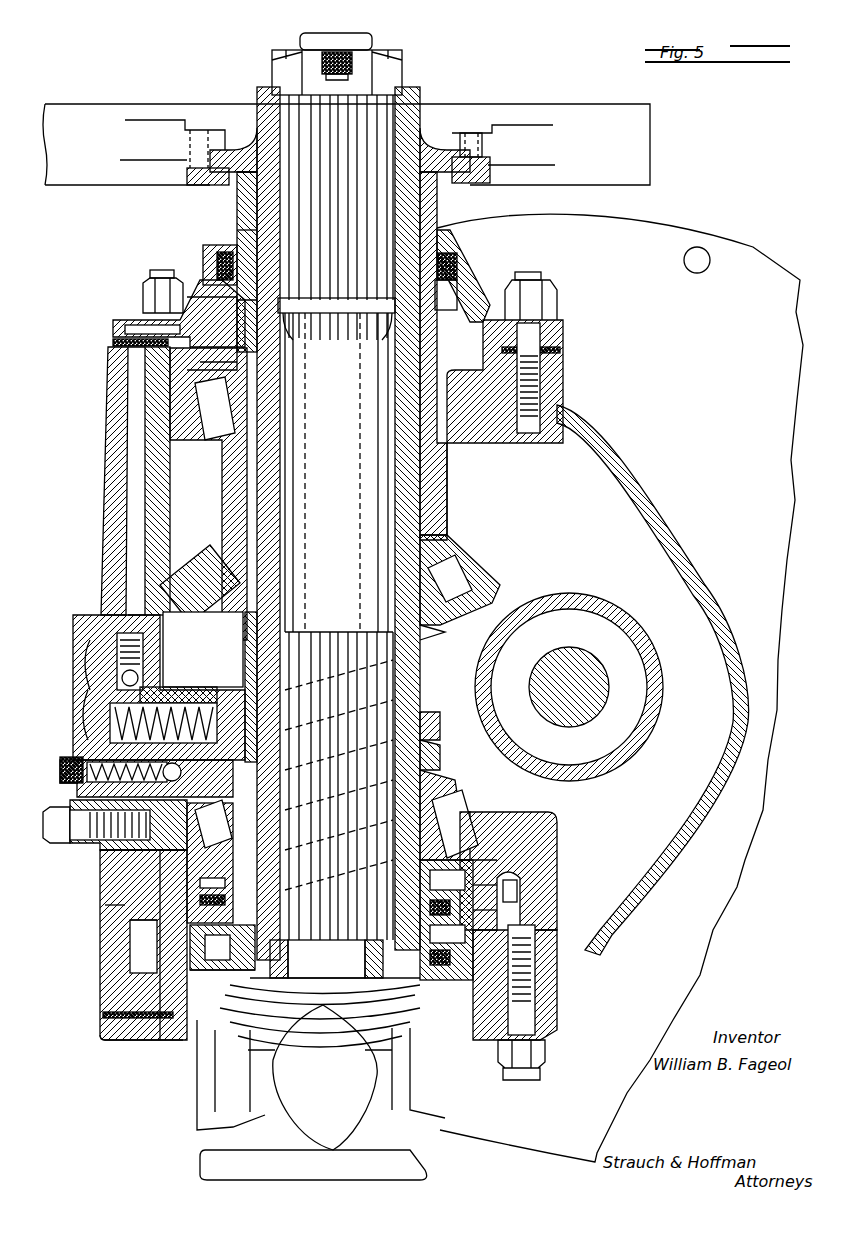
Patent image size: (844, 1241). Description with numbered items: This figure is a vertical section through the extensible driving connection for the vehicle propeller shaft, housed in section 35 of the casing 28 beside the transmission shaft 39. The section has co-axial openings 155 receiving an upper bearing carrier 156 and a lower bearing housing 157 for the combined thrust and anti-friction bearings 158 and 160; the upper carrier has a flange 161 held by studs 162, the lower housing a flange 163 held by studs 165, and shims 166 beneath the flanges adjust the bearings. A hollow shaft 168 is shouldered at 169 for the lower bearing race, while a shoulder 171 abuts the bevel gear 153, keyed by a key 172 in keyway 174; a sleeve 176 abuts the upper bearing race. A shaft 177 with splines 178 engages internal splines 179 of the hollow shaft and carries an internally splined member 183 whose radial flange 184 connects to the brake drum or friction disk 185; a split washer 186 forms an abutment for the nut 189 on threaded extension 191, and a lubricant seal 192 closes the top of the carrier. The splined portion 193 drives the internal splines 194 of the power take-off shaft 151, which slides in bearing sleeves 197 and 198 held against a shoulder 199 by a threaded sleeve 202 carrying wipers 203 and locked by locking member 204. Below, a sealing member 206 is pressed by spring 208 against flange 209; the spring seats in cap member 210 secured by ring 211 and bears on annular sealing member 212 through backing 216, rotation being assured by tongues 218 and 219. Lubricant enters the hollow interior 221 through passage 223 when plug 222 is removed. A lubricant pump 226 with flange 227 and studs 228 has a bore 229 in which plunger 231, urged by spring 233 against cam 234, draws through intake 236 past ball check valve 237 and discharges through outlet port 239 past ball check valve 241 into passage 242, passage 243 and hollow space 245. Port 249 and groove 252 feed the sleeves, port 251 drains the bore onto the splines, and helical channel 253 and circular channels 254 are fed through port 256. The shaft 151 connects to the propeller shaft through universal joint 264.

The casing 28 is at (605, 433).
The casing section 35 is at (627, 520).
The transmission shaft 39 is at (583, 652).
The power take-off shaft 151 is at (280, 443).
The bevel gear 153 is at (463, 557).
The co-axial openings 155 is at (163, 412).
The upper bearing carrier 156 is at (230, 270).
The lower bearing housing 157 is at (170, 1040).
The combined thrust and anti-friction bearing 158 is at (220, 420).
The combined thrust and anti-friction bearing 160 is at (440, 820).
The flange 161 is at (125, 330).
The studs 162 is at (163, 272).
The flange 163 is at (115, 1042).
The studs 165 is at (523, 1020).
The shims 166 is at (110, 345).
The hollow shaft 168 is at (421, 312).
The shoulder 169 is at (427, 778).
The shoulder 171 is at (430, 626).
The key 172 is at (447, 487).
The keyway 174 is at (463, 592).
The sleeve 176 is at (427, 213).
The shaft 177 is at (345, 268).
The splines 178 is at (377, 197).
The internal splines 179 is at (255, 197).
The internally splined member 183 is at (427, 137).
The radial flange 184 is at (490, 158).
The brake drum or friction disk 185 is at (647, 118).
The split washer 186 is at (257, 315).
The nut 189 is at (402, 62).
The threaded extension 191 is at (358, 43).
The lubricant seal 192 is at (470, 267).
The externally splined portion 193 is at (372, 655).
The internal splines 194 is at (380, 548).
The bearing sleeve 197 is at (427, 763).
The bearing sleeve 198 is at (245, 640).
The shoulder 199 is at (232, 612).
The threaded sleeve 202 is at (230, 905).
The packing members or wipers 203 is at (295, 960).
The locking member 204 is at (440, 858).
The sealing member 206 is at (120, 912).
The spring 208 is at (200, 933).
The flange 209 is at (230, 887).
The cap member 210 is at (210, 972).
The ring 211 is at (440, 970).
The annular sealing member 212 is at (465, 905).
The backing 216 is at (445, 925).
The tongue 218 is at (230, 985).
The tongue 219 is at (452, 880).
The hollow interior 221 is at (242, 215).
The threaded filling plug 222 is at (335, 60).
The internally threaded passage 223 is at (335, 72).
The lubricant pump 226 is at (83, 717).
The flange 227 is at (83, 835).
The studs 228 is at (45, 812).
The cylindrical bore 229 is at (83, 733).
The plunger 231 is at (197, 693).
The spring 233 is at (103, 705).
The cam 234 is at (233, 698).
The pump intake 236 is at (187, 795).
The ball check valve 237 is at (68, 772).
The outlet port 239 is at (122, 680).
The ball check valve 241 is at (233, 247).
The passage 242 is at (130, 570).
The passage 243 is at (133, 335).
The hollow space 245 is at (227, 355).
The port 249 is at (263, 338).
The port 251 is at (378, 398).
The groove 252 is at (260, 348).
The helical channel 253 is at (398, 680).
The circular channels 254 is at (425, 737).
The port 256 is at (183, 773).
The universal joint 264 is at (273, 1152).